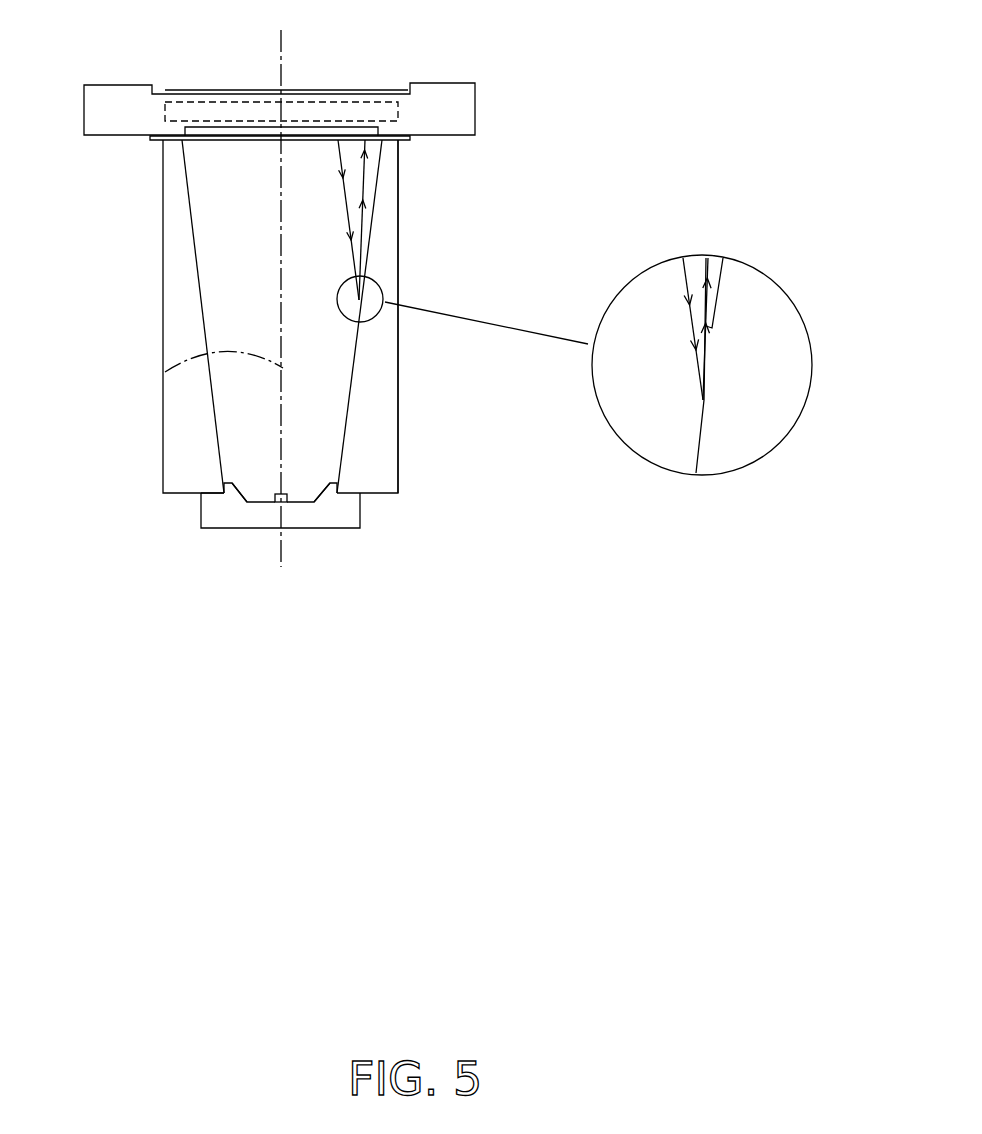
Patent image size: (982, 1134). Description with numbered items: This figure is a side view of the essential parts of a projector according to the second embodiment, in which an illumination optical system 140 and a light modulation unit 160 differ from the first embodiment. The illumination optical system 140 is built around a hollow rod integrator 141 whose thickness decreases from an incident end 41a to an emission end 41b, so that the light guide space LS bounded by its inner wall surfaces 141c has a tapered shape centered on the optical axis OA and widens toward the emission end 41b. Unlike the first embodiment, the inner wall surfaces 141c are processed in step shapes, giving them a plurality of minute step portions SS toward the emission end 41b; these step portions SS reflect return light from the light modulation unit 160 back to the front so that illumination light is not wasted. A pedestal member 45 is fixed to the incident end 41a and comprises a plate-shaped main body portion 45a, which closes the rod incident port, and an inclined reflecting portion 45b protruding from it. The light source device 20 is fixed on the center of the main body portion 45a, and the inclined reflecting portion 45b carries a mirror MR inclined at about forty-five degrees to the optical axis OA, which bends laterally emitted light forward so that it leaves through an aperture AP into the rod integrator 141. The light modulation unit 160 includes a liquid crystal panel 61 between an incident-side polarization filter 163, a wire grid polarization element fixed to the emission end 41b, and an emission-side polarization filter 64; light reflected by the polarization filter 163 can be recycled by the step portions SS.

The light source device 20 is at (284, 504).
The incident end 41a is at (383, 478).
The emission end 41b is at (392, 163).
The pedestal member 45 is at (363, 518).
The main body portion 45a is at (208, 513).
The inclined reflecting portion 45b is at (235, 504).
The liquid crystal panel 61 is at (384, 96).
The polarization filter 64 is at (192, 88).
The illumination optical system 140 is at (135, 410).
The rod integrator 141 is at (177, 307).
The inner wall surfaces 141c is at (200, 268).
The light modulation unit 160 is at (481, 69).
The polarization filter 163 is at (152, 140).
The light guide space LS is at (235, 297).
The optical axis OA is at (162, 367).
The mirror MR is at (236, 484).
The aperture AP is at (301, 504).
The step portions SS is at (714, 325).